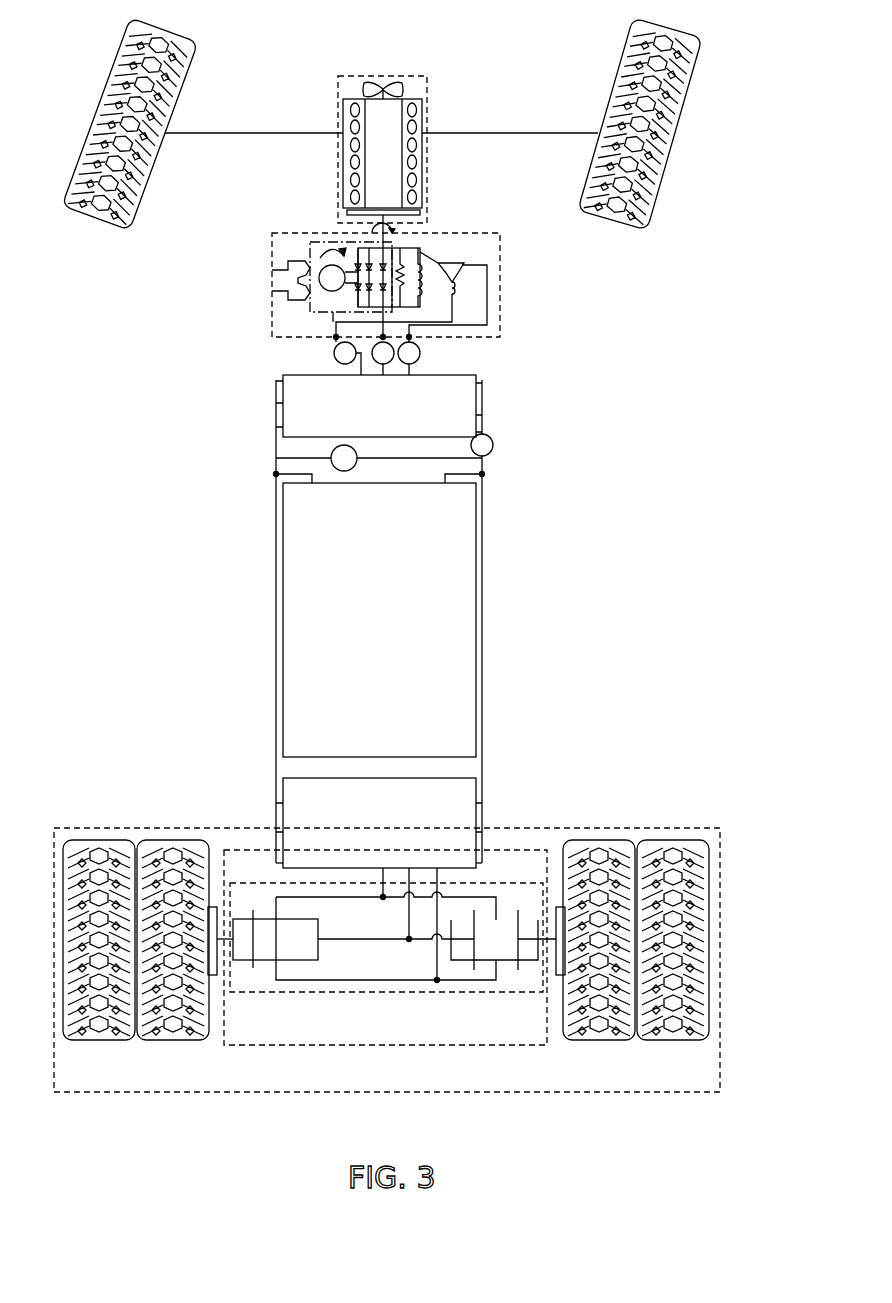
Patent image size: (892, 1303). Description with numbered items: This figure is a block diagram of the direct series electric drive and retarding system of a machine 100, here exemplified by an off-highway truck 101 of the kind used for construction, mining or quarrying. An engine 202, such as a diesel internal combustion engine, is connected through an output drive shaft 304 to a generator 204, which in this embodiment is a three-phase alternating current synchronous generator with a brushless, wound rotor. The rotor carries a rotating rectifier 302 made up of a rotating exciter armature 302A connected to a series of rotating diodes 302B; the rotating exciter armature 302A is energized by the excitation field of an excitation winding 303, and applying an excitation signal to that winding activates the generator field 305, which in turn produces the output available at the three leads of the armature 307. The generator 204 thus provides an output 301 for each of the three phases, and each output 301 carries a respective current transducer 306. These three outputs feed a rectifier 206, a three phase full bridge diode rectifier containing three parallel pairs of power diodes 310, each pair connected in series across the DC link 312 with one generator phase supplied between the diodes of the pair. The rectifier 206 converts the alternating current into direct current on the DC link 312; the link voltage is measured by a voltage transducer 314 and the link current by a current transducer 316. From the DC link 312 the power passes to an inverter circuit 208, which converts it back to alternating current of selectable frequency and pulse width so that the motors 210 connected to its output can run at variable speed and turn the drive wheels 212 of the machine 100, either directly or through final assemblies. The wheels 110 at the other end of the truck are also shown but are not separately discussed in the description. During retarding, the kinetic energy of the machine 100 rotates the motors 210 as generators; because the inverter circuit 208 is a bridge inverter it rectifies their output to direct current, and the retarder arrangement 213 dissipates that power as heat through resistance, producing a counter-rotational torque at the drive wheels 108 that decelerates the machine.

The machine 100 is at (668, 353).
The off-highway truck 101 is at (118, 561).
The drive wheels 108 is at (164, 1030).
The front wheels 110 is at (106, 119).
The engine 202 is at (336, 170).
The generator 204 is at (503, 292).
The rectifier 206 is at (478, 393).
The inverter circuit 208 is at (478, 822).
The motors 210 is at (425, 993).
The drive wheels 212 is at (296, 1094).
The retarder arrangement 213 is at (478, 644).
The output 301 is at (453, 297).
The rotating rectifier 302 is at (303, 247).
The rotating exciter armature 302A is at (330, 278).
The rotating diodes 302B is at (346, 302).
The excitation winding 303 is at (285, 292).
The output drive shaft 304 is at (372, 232).
The generator field 305 is at (426, 250).
The current transducer 306 is at (334, 357).
The armature 307 is at (459, 267).
The power diodes 310 is at (470, 376).
The DC link 312 is at (276, 570).
The voltage transducer 314 is at (331, 456).
The current transducer 316 is at (494, 448).